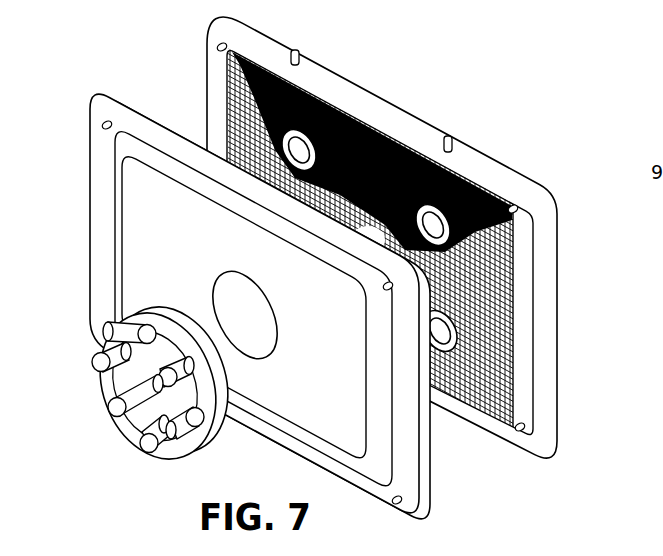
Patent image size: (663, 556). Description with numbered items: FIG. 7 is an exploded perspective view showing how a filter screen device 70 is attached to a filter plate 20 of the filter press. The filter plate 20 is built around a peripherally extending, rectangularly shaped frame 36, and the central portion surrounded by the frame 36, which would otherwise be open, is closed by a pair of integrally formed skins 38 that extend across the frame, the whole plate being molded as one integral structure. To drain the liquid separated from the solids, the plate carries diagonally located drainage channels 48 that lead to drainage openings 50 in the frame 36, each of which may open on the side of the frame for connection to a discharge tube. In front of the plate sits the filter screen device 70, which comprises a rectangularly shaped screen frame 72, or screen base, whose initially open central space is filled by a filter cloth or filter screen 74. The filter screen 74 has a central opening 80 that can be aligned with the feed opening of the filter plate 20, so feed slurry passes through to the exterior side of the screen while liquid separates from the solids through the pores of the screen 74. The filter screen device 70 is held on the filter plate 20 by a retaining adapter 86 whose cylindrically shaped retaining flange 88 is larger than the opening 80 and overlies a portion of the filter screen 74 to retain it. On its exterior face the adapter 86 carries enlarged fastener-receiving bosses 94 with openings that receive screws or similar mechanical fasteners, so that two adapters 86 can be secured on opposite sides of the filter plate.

The filter plate 20 is at (465, 115).
The frame 36 is at (351, 88).
The skins 38 is at (517, 302).
The drainage channels 48 is at (237, 77).
The drainage openings 50 is at (218, 44).
The filter screen device 70 is at (440, 487).
The screen frame 72 is at (253, 427).
The filter screen 74 is at (127, 263).
The central opening 80 is at (263, 328).
The retaining adapter 86 is at (117, 433).
The retaining flange 88 is at (167, 330).
The fastener-receiving bosses 94 is at (92, 363).